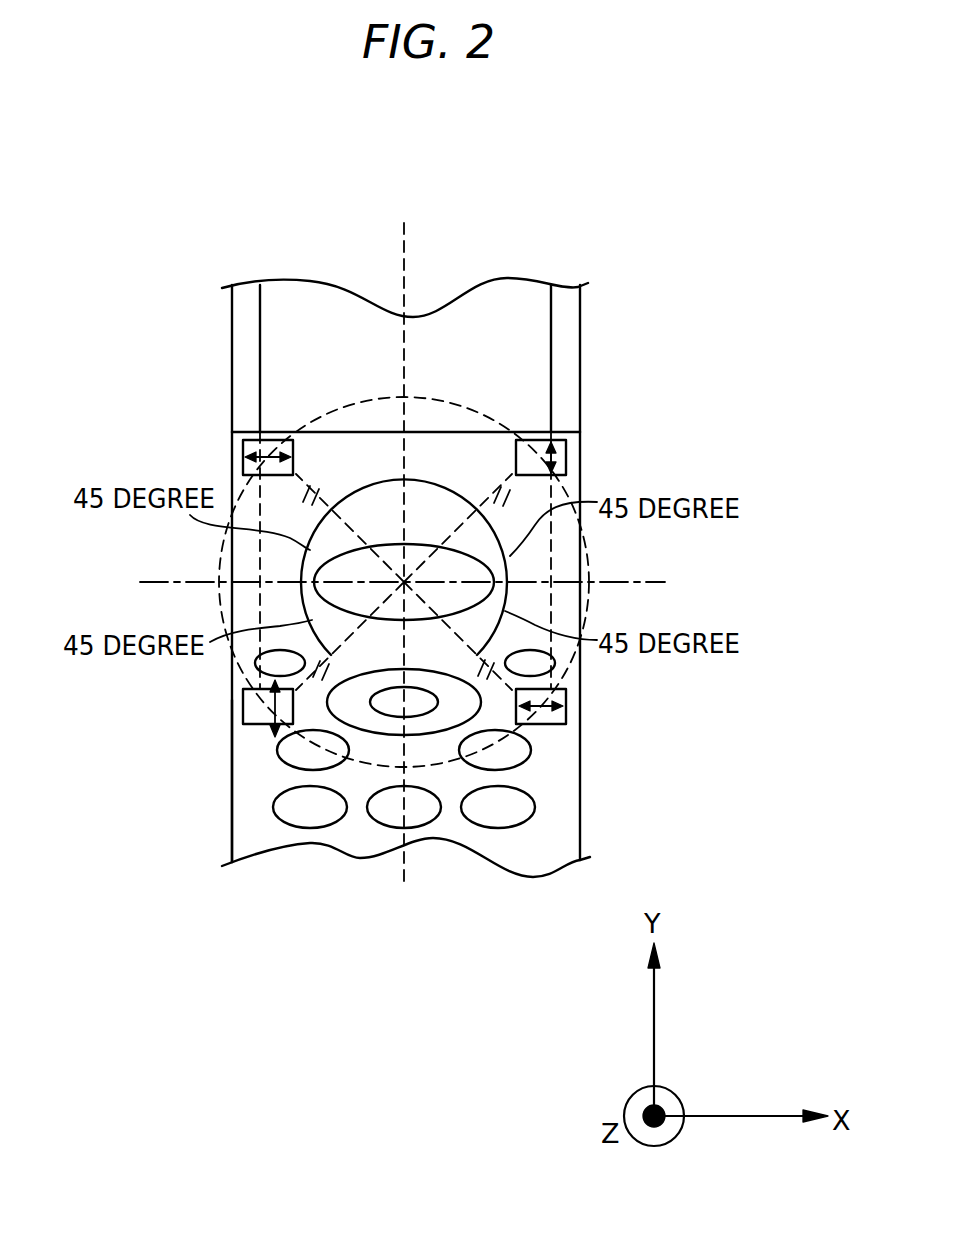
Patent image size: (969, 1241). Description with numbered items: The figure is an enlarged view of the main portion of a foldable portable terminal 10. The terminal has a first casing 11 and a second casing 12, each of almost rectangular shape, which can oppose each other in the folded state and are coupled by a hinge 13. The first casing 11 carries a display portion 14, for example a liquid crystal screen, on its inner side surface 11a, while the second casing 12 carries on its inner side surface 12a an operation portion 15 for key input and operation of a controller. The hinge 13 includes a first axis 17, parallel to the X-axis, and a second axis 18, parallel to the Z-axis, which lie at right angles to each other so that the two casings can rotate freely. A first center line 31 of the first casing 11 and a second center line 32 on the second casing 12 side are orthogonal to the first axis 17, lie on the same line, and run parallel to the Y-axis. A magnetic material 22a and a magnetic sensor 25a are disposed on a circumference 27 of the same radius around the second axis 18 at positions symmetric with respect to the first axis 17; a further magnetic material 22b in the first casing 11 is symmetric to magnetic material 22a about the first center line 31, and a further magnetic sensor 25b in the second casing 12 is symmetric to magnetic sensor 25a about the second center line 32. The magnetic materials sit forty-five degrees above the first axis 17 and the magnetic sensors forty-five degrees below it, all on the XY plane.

The portable terminal 10 is at (476, 243).
The first casing 11 is at (222, 303).
The inner side surface of first casing 11a is at (240, 343).
The second casing 12 is at (220, 843).
The inner side surface of second casing 12a is at (232, 815).
The hinge 13 is at (425, 545).
The display portion 14 is at (540, 333).
The operation portion 15 is at (567, 782).
The first axis 17 is at (185, 582).
The second axis 18 is at (404, 582).
The magnetic material 22a is at (243, 455).
The magnetic material 22b is at (566, 455).
The magnetic sensor 25a is at (243, 705).
The magnetic sensor 25b is at (566, 697).
The circumference around second axis 27 is at (588, 537).
The first center line 31 is at (404, 277).
The second center line 32 is at (404, 862).